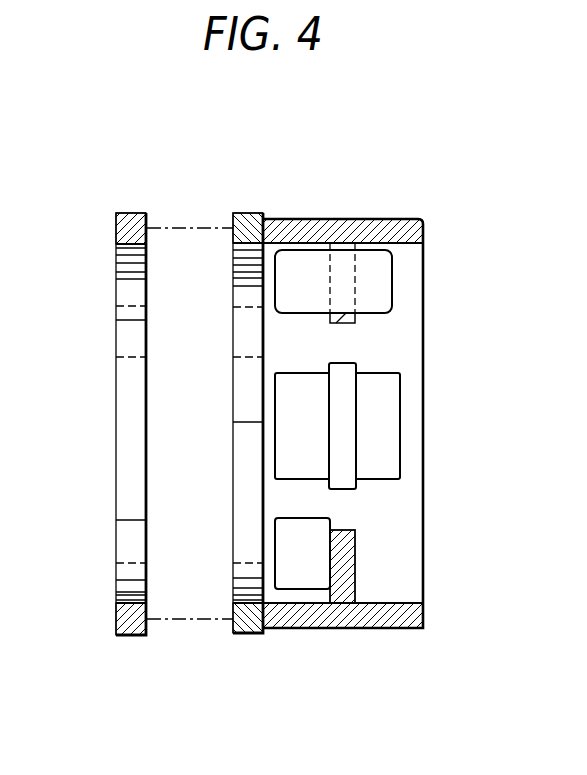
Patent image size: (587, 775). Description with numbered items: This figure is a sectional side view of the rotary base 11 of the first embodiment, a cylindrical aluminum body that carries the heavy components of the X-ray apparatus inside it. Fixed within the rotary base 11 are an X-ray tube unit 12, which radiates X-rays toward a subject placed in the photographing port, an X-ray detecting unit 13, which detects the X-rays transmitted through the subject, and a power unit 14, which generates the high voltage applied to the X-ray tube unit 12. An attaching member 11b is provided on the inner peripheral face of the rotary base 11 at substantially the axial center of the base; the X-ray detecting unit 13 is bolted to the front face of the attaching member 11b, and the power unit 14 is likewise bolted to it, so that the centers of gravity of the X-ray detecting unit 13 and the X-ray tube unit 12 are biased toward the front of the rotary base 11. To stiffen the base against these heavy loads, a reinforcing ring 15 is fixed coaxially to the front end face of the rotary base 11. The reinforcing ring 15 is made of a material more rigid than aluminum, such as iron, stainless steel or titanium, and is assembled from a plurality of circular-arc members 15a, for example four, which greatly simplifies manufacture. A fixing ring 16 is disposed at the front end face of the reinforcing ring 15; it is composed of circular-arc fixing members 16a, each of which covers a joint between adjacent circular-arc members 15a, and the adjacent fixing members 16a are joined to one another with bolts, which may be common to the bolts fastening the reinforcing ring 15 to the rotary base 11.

The rotary base 11 is at (400, 218).
The attaching member 11b is at (356, 432).
The X-ray tube unit 12 is at (297, 263).
The X-ray detecting unit 13 is at (305, 578).
The power unit 14 is at (284, 449).
The reinforcing ring 15 is at (242, 195).
The circular-arc members 15a is at (233, 338).
The fixing ring 16 is at (124, 195).
The circular-arc fixing members 16a is at (116, 277).